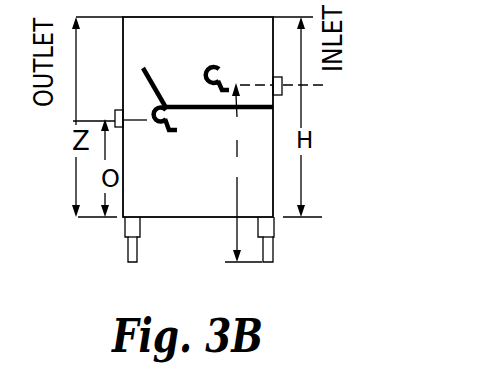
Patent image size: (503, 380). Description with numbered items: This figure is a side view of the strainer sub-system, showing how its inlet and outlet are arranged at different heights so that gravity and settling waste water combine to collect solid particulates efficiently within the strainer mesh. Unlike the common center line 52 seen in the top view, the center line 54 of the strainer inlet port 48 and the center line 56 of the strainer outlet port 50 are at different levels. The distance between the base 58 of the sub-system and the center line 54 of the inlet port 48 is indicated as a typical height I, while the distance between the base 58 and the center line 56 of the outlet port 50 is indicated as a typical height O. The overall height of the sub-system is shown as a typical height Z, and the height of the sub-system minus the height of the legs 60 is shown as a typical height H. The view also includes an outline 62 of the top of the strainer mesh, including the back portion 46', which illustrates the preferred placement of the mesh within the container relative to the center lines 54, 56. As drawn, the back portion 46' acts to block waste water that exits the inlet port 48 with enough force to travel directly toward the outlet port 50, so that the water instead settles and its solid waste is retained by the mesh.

The back portion 46' is at (162, 83).
The strainer inlet port 48 is at (282, 95).
The strainer outlet port 50 is at (116, 109).
The common center line 52 is at (242, 143).
The center line 54 is at (247, 85).
The center line 56 is at (135, 121).
The base 58 is at (232, 264).
The legs 60 is at (137, 245).
The outline 62 is at (189, 110).